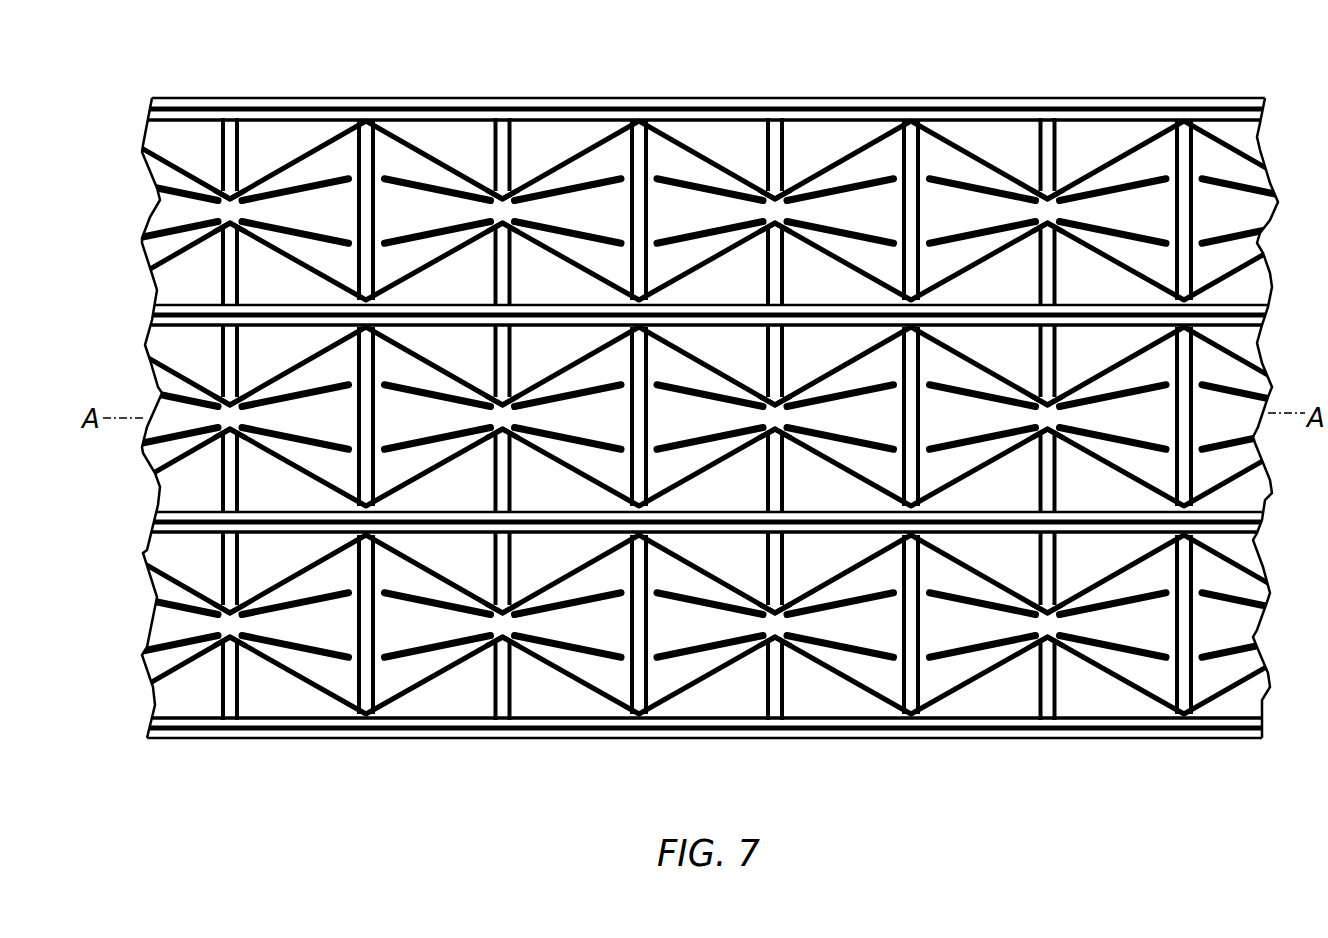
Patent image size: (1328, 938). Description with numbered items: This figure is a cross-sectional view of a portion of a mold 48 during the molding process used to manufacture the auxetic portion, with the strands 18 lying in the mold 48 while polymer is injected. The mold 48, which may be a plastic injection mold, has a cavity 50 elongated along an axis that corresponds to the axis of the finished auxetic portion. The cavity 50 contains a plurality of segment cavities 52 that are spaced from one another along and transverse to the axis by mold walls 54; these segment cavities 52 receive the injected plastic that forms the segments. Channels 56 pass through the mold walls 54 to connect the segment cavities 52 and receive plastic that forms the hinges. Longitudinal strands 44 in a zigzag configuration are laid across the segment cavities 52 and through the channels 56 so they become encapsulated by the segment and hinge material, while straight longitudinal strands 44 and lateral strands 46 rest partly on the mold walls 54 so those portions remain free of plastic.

The strands 18 is at (283, 190).
The longitudinal strands 44 is at (391, 97).
The lateral strands 46 is at (906, 160).
The mold 48 is at (251, 762).
The cavity 50 is at (176, 697).
The segment cavities 52 is at (602, 545).
The mold walls 54 is at (773, 686).
The channels 56 is at (776, 638).